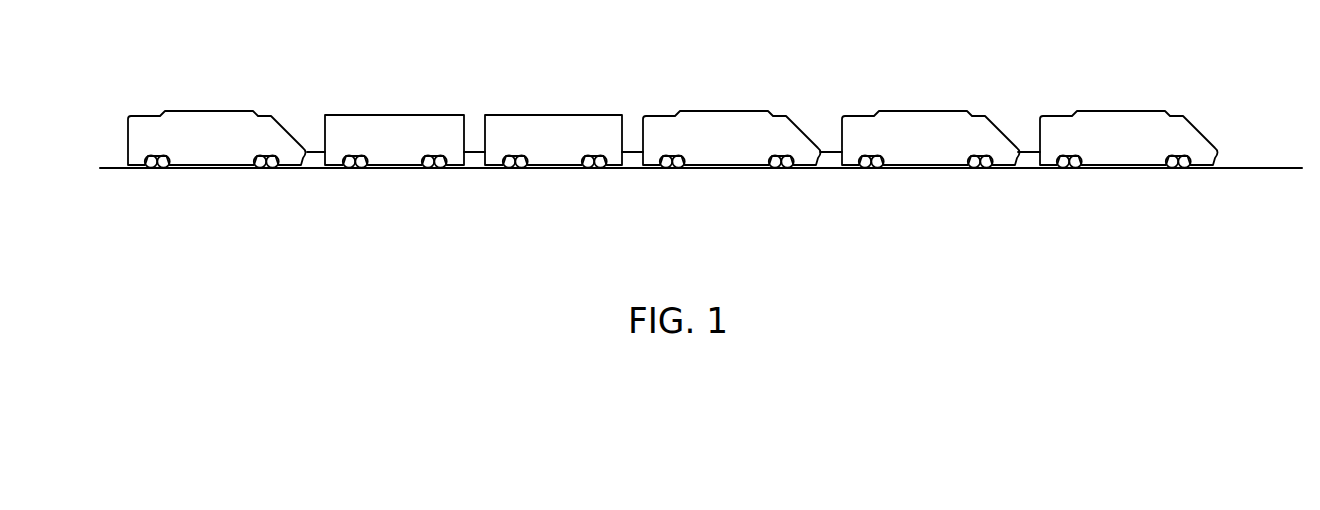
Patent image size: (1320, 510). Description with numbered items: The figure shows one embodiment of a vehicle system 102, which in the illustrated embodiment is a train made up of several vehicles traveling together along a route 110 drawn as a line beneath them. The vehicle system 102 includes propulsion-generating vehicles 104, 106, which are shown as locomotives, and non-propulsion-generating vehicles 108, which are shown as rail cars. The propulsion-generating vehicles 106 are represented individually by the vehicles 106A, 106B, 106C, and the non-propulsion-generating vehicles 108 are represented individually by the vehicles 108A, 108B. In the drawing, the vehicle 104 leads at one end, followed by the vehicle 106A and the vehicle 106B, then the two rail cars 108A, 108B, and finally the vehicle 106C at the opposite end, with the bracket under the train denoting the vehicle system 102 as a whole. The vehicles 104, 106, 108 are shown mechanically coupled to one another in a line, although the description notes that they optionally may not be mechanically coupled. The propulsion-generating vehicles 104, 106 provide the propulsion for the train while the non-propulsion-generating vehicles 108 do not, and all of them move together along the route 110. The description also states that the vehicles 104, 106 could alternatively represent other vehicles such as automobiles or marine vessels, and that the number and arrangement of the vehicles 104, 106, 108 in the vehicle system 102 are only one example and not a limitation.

The vehicle system 102 is at (689, 135).
The propulsion-generating vehicle 104 is at (1129, 112).
The propulsion-generating vehicles 106 is at (576, 98).
The propulsion-generating vehicle 106A is at (920, 112).
The propulsion-generating vehicle 106B is at (722, 112).
The propulsion-generating vehicle 106C is at (210, 112).
The non-propulsion-generating vehicles 108 is at (481, 98).
The non-propulsion-generating vehicle 108A is at (548, 114).
The non-propulsion-generating vehicle 108B is at (393, 114).
The route 110 is at (1262, 167).